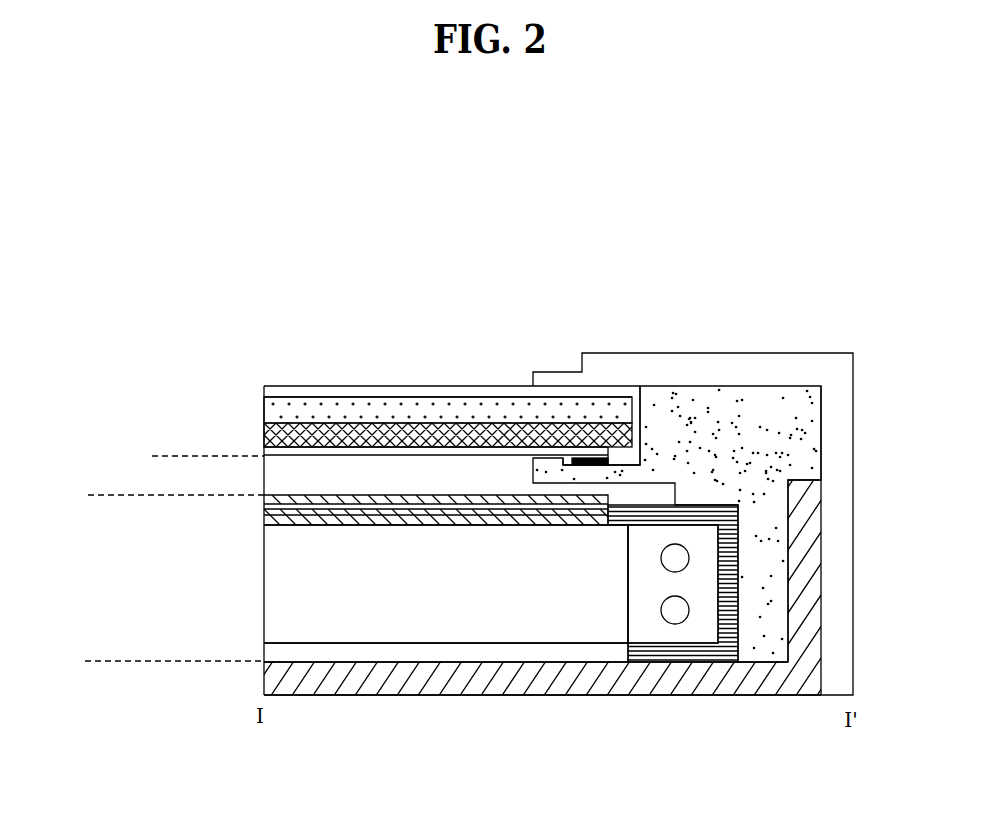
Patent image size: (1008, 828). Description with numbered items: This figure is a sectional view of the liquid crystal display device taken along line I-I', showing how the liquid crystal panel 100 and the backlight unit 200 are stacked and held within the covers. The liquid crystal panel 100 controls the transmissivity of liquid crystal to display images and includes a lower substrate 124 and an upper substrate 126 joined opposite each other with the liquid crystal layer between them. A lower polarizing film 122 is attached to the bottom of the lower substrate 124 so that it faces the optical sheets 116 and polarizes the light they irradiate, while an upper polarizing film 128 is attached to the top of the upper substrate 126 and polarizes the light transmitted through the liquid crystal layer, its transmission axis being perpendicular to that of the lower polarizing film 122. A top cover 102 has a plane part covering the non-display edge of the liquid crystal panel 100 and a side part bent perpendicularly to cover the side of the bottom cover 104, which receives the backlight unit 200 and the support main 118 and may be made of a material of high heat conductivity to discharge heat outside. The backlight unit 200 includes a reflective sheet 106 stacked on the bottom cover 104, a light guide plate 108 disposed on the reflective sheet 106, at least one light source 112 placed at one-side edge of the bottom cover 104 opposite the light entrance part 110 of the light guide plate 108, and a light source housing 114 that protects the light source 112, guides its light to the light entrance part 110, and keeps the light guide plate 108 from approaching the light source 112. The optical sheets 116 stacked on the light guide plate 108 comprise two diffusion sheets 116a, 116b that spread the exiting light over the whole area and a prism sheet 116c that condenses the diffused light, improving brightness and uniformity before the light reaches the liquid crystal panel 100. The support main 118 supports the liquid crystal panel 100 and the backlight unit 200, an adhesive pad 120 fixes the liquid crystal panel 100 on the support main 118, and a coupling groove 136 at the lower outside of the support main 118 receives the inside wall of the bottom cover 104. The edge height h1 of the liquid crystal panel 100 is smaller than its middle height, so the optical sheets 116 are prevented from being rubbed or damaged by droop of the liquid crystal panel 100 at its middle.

The liquid crystal panel 100 is at (257, 385).
The top cover 102 is at (672, 362).
The bottom cover 104 is at (774, 686).
The reflective sheet 106 is at (376, 655).
The light guide plate 108 is at (487, 634).
The light entrance part 110 is at (628, 593).
The light source 112 is at (675, 617).
The light source housing 114 is at (724, 656).
The optical sheets 116 is at (157, 502).
The diffusion sheet 116a is at (270, 517).
The diffusion sheet 116b is at (270, 507).
The prism sheet 116c is at (270, 500).
The support main 118 is at (779, 392).
The adhesive pad 120 is at (593, 462).
The lower polarizing film 122 is at (483, 452).
The lower substrate 124 is at (439, 431).
The upper substrate 126 is at (386, 405).
The upper polarizing film 128 is at (326, 392).
The coupling groove 136 is at (792, 578).
The backlight unit 200 is at (85, 495).
The edge height h1 is at (166, 456).